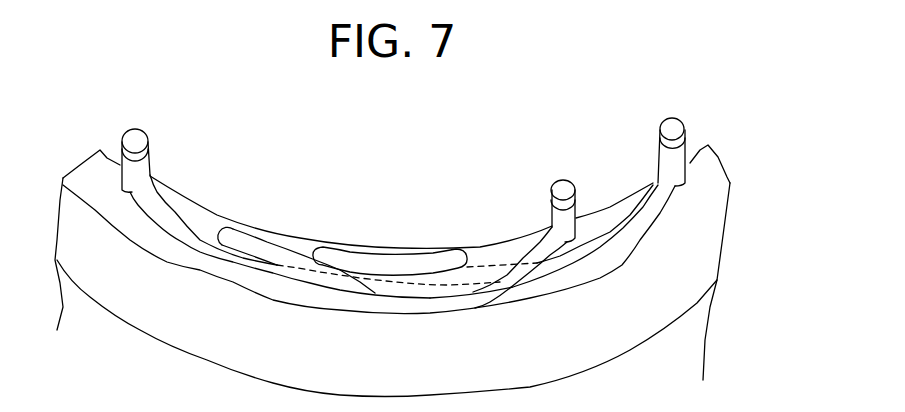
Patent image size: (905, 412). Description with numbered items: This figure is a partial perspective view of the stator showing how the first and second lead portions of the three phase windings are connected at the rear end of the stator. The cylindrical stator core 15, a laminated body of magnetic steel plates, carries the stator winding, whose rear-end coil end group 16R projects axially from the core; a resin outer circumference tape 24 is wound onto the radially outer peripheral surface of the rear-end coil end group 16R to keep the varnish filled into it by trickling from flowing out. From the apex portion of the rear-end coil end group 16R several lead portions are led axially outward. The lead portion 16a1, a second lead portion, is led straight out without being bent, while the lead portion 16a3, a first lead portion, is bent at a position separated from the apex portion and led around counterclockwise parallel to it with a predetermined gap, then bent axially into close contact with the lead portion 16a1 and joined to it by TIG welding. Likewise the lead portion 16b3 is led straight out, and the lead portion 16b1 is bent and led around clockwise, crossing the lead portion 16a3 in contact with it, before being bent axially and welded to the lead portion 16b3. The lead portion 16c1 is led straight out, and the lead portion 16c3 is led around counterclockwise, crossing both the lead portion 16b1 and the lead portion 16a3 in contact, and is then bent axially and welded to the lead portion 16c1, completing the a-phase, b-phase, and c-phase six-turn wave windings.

The stator core 15 is at (690, 340).
The outer circumference tape 24 is at (713, 243).
The rear-end coil end group 16R is at (262, 235).
The lead portion 16b3 is at (125, 177).
The lead portion 16b1 is at (157, 205).
The lead portion 16c3 is at (548, 229).
The lead portion 16c1 is at (580, 217).
The lead portion 16a3 is at (655, 180).
The lead portion 16a1 is at (686, 158).